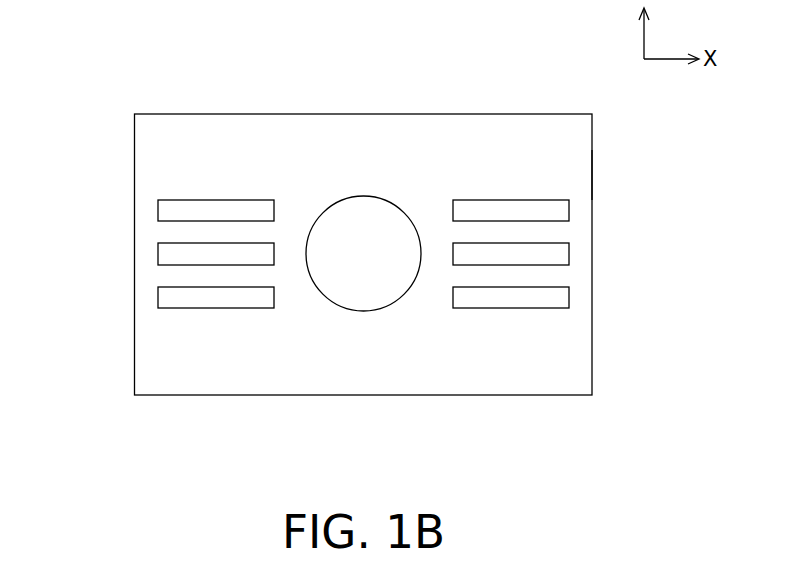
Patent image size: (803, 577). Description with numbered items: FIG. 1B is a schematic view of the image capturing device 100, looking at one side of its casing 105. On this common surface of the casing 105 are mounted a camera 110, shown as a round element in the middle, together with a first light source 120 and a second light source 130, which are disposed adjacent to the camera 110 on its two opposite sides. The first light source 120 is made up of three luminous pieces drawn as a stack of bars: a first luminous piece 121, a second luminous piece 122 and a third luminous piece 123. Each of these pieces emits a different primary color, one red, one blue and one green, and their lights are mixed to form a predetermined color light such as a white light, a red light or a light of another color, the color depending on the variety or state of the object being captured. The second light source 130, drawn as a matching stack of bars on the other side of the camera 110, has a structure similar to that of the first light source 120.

The image capturing device 100 is at (252, 55).
The casing 105 is at (592, 175).
The camera 110 is at (362, 311).
The first light source 120 is at (150, 252).
The first luminous piece 121 is at (177, 301).
The second luminous piece 122 is at (166, 259).
The third luminous piece 123 is at (166, 215).
The second light source 130 is at (575, 212).